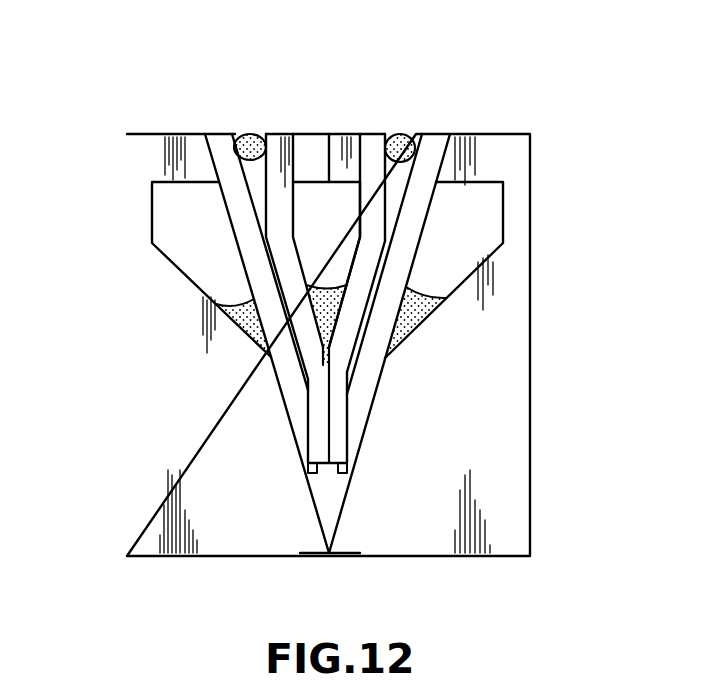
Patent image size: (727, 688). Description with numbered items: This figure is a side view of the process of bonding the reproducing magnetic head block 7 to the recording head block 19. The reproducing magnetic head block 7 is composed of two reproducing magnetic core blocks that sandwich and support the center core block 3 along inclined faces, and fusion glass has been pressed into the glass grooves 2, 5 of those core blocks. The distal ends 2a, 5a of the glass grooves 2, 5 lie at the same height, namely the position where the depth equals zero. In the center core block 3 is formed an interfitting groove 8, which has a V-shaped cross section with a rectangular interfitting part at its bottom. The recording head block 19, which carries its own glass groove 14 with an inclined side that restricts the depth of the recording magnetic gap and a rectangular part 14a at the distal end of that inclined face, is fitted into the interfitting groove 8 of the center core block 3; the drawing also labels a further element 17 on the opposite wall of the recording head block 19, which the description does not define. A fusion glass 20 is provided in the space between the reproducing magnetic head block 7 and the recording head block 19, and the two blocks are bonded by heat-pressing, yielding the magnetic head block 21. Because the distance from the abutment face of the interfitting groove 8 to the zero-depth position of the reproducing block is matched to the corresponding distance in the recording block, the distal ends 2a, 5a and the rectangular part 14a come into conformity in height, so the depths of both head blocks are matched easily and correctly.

The glass groove 2 is at (150, 208).
The distal end of glass groove 2a is at (268, 368).
The center core block 3 is at (217, 134).
The glass groove 5 is at (505, 212).
The distal end of glass groove 5a is at (390, 370).
The reproducing magnetic head block 7 is at (394, 568).
The interfitting groove 8 is at (236, 134).
The glass groove 14 is at (296, 220).
The rectangular part 14a is at (323, 366).
The central chamber right wall 17 is at (358, 220).
The recording head block 19 is at (340, 106).
The fusion glass 20 is at (252, 135).
The magnetic head block 21 is at (545, 497).